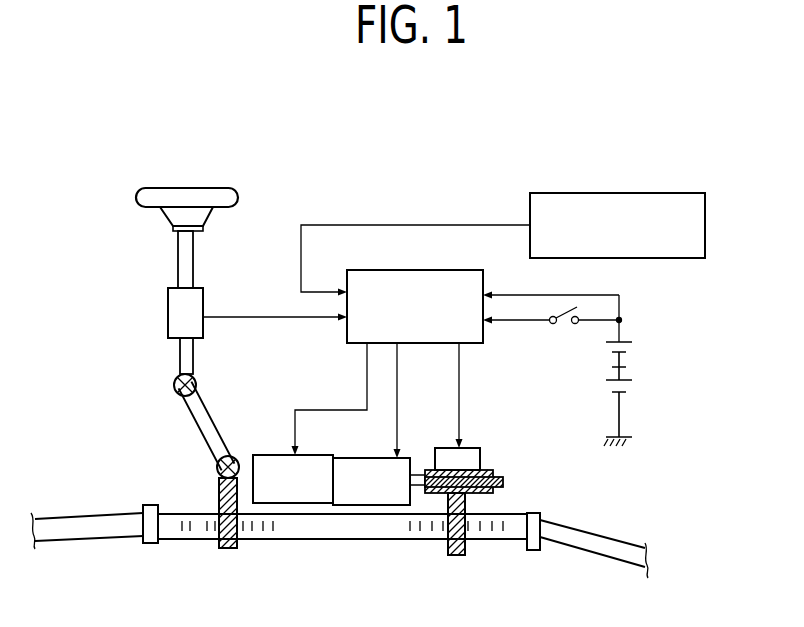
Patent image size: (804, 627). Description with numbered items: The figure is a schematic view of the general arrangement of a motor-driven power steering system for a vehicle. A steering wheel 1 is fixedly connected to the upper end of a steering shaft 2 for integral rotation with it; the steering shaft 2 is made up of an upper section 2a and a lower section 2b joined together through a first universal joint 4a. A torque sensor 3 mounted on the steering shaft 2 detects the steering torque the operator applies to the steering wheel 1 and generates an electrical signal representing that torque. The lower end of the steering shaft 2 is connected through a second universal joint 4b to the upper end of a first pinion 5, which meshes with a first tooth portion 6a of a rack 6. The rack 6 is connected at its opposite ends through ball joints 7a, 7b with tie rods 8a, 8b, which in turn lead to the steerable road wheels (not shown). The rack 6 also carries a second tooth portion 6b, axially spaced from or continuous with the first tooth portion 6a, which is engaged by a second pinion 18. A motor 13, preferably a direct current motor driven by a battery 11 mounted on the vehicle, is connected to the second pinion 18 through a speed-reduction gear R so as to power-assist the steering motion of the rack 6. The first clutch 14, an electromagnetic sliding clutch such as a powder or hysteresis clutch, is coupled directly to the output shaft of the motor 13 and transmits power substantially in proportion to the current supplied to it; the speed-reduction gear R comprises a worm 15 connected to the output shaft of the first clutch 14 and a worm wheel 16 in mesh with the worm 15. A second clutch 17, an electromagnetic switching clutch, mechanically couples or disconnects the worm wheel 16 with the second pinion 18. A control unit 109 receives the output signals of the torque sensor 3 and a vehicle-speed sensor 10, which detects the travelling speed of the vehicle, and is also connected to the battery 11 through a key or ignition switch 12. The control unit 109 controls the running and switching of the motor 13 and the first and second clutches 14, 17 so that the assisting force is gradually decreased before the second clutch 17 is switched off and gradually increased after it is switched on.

The steering wheel 1 is at (224, 197).
The steering shaft 2 is at (159, 350).
The upper section 2a is at (183, 260).
The lower section 2b is at (202, 432).
The torque sensor 3 is at (172, 297).
The first universal joint 4a is at (174, 387).
The second universal joint 4b is at (217, 470).
The first pinion 5 is at (232, 549).
The rack 6 is at (342, 555).
The first tooth portion 6a is at (256, 531).
The second tooth portion 6b is at (432, 531).
The ball joint 7a is at (150, 544).
The ball joint 7b is at (535, 551).
The tie rod 8a is at (78, 541).
The tie rod 8b is at (600, 558).
The vehicle-speed sensor 10 is at (618, 193).
The control unit 109 is at (400, 270).
The battery 11 is at (627, 366).
The key or ignition switch 12 is at (565, 323).
The motor 13 is at (271, 455).
The first clutch 14 is at (406, 458).
The worm 15 is at (503, 483).
The worm wheel 16 is at (493, 471).
The speed-reduction gear R is at (507, 471).
The second clutch 17 is at (468, 448).
The second pinion 18 is at (456, 556).